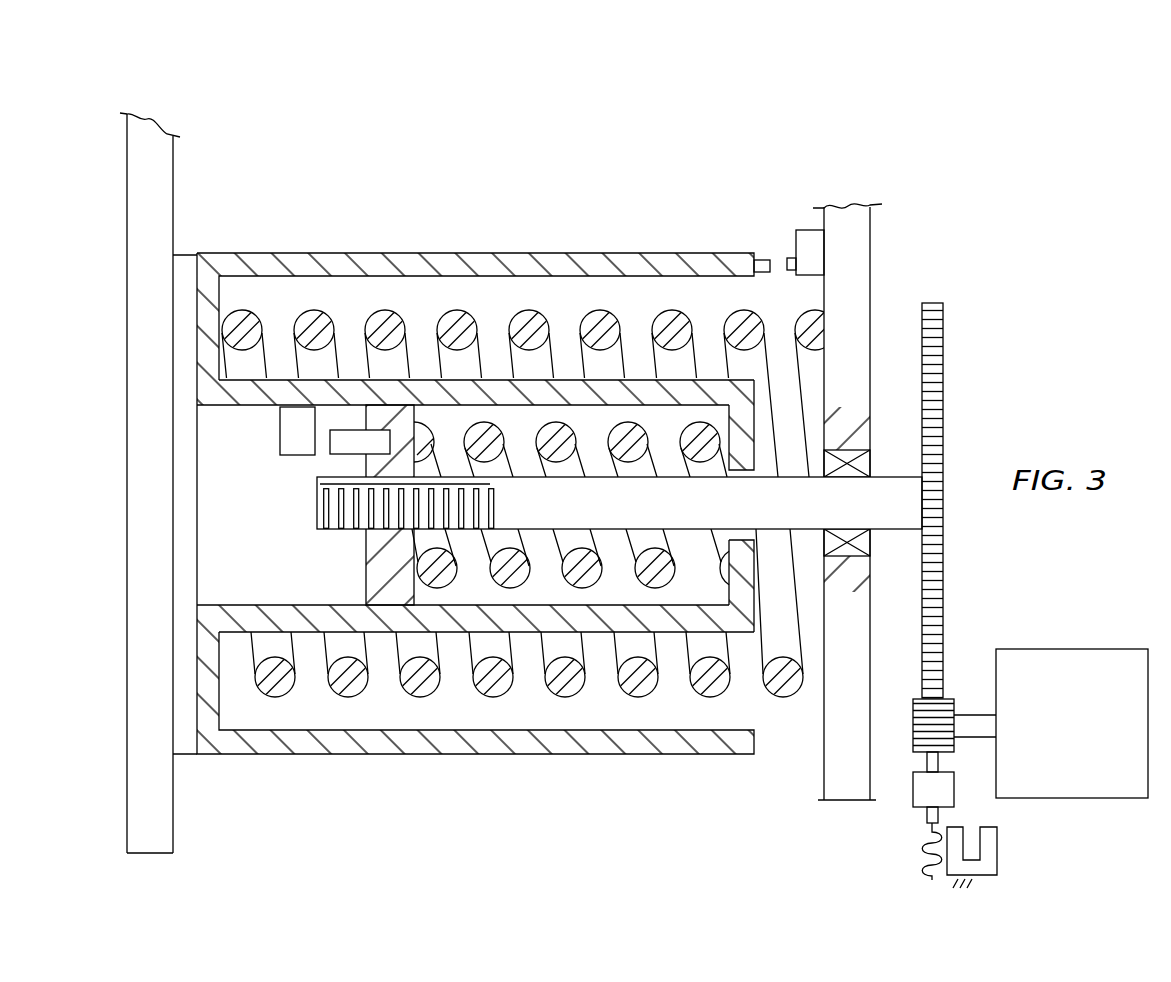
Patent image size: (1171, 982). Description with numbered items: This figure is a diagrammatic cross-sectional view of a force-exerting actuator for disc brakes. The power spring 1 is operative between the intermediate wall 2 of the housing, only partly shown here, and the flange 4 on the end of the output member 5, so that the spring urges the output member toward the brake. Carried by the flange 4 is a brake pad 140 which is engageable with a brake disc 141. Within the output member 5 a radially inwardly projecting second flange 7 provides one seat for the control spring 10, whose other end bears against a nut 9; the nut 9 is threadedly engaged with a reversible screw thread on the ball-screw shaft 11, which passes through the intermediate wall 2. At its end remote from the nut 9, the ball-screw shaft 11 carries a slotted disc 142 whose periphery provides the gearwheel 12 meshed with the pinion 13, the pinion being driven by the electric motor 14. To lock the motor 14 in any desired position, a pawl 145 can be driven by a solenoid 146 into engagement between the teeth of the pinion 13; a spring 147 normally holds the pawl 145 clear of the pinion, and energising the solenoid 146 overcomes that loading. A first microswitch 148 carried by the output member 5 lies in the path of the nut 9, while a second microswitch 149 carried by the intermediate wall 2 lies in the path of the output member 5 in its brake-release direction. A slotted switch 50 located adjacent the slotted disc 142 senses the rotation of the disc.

The power spring 1 is at (573, 698).
The intermediate wall 2 is at (848, 292).
The flange 4 is at (222, 298).
The output member 5 is at (549, 389).
The second flange 7 is at (742, 464).
The nut 9 is at (375, 585).
The control spring 10 is at (611, 451).
The ball-screw shaft 11 is at (317, 513).
The gearwheel 12 is at (943, 688).
The pinion 13 is at (928, 713).
The electric motor 14 is at (1087, 736).
The switch 50 is at (997, 849).
The brake pad 140 is at (183, 709).
The brake disc 141 is at (155, 211).
The slotted disc 142 is at (931, 355).
The pawl 145 is at (927, 765).
The solenoid 146 is at (935, 792).
The spring 147 is at (925, 852).
The first microswitch 148 is at (290, 440).
The second microswitch 149 is at (808, 256).